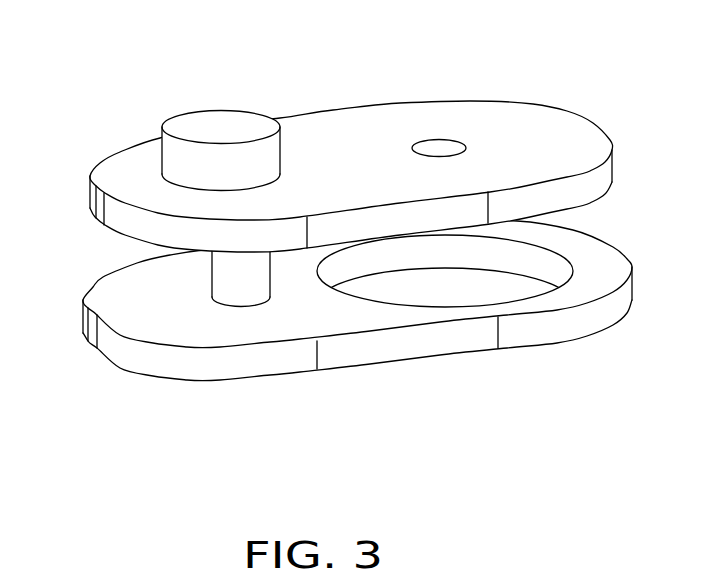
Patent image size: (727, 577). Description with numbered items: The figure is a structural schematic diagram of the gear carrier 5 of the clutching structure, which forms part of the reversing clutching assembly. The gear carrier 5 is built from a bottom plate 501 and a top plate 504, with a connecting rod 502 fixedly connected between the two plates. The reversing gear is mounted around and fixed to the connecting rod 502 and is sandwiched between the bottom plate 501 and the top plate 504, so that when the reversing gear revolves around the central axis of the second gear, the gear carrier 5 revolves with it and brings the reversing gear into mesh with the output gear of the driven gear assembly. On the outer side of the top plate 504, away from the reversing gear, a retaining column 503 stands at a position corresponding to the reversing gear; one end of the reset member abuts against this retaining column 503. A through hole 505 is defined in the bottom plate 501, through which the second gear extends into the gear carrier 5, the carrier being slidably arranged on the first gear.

The gear carrier 5 is at (333, 254).
The bottom plate 501 is at (360, 357).
The connecting rod 502 is at (245, 280).
The retaining column 503 is at (257, 170).
The top plate 504 is at (332, 185).
The through hole 505 is at (492, 283).